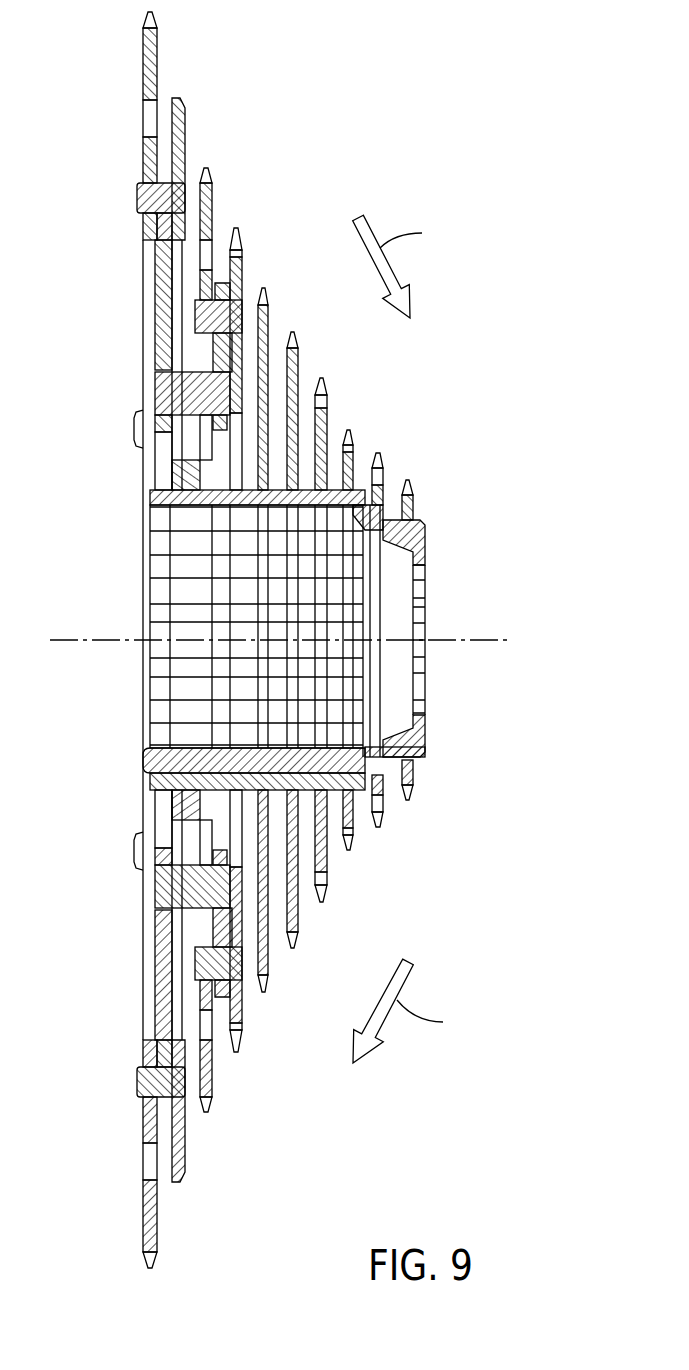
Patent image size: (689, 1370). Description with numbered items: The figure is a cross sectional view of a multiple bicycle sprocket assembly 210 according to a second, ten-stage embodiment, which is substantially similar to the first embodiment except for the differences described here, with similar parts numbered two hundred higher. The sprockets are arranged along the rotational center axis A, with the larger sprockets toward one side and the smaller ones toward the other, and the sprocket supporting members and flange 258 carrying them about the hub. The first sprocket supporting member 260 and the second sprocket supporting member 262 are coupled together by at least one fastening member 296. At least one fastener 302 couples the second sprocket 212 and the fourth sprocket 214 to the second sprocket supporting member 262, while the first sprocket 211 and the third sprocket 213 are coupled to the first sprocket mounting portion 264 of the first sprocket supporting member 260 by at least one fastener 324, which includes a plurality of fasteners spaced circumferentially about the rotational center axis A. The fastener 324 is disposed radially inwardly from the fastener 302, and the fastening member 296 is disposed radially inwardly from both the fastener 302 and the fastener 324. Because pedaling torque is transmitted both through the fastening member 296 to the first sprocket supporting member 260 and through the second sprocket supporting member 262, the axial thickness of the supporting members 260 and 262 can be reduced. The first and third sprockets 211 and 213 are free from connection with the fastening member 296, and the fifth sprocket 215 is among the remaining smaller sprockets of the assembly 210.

The multiple bicycle sprocket assembly 210 is at (455, 405).
The first sprocket 211 is at (243, 237).
The second sprocket 212 is at (186, 93).
The third sprocket 213 is at (214, 170).
The fourth sprocket 214 is at (143, 17).
The fifth sprocket 215 is at (270, 297).
The sprocket supporting member flange 258 is at (143, 758).
The first sprocket supporting member 260 is at (211, 355).
The second sprocket supporting member 262 is at (156, 270).
The first sprocket mounting portion 264 is at (216, 293).
The fastening member 296 is at (157, 392).
The fastener 302 is at (140, 198).
The fastener 324 is at (194, 312).
The rotational center axis A is at (470, 642).